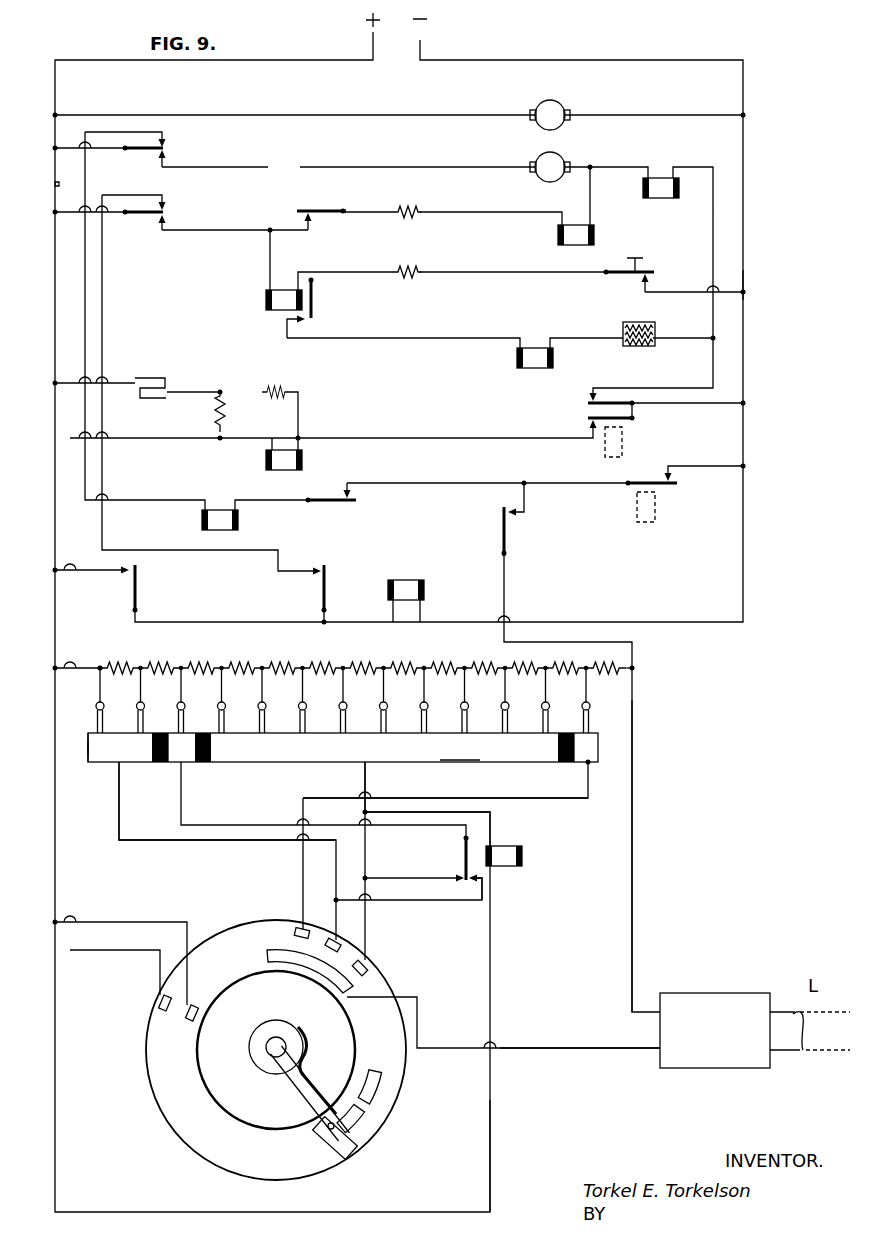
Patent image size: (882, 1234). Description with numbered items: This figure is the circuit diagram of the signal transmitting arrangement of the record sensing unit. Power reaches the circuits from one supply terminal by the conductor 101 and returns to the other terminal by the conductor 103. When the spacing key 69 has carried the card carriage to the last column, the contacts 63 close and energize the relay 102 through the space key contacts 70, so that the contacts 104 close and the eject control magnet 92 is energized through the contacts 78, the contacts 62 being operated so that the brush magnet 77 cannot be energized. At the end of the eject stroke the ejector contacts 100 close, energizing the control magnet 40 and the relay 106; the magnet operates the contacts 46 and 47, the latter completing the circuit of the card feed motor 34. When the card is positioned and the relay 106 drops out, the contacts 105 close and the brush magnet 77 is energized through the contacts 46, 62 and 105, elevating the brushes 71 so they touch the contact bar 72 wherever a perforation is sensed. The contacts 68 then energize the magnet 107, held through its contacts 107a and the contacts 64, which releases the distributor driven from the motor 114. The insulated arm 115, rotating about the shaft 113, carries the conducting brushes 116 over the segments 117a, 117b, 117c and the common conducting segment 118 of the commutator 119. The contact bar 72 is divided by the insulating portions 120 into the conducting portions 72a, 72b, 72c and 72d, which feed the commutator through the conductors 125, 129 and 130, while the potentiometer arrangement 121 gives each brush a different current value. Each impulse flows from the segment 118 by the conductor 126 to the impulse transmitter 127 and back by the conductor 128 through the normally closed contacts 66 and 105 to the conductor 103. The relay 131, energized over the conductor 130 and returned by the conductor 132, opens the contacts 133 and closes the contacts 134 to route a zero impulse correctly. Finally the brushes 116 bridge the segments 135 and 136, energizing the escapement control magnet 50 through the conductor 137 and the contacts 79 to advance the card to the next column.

The conductor 101 is at (56, 184).
The contacts 46 is at (158, 140).
The contacts 47 is at (158, 156).
The contacts 64 is at (166, 206).
The contacts 63 is at (160, 226).
The ejector contacts 100 is at (312, 218).
The relay 102 is at (283, 291).
The contacts 104 is at (318, 321).
The motor 114 is at (544, 112).
The card feed motor 34 is at (544, 163).
The control magnet 40 is at (574, 231).
The relay 106 is at (660, 187).
The spacing key 69 is at (638, 262).
The space key contacts 70 is at (633, 281).
The conductor 103 is at (745, 285).
The eject control magnet 92 is at (531, 352).
The contacts 78 is at (600, 400).
The contacts 79 is at (583, 427).
The brush magnet 77 is at (630, 445).
The escapement control magnet 50 is at (302, 459).
The contacts 62 is at (352, 492).
The contacts 66 is at (510, 506).
The contacts 105 is at (675, 480).
The contacts 107a is at (321, 568).
The magnet 107 is at (405, 583).
The contacts 68 is at (125, 583).
The potentiometer arrangement 121 is at (600, 666).
The brushes 71 is at (100, 717).
The contact bar 72 is at (487, 762).
The insulating portions 120 is at (558, 749).
The conducting portion 72a is at (119, 748).
The conducting portion 72b is at (182, 748).
The conducting portion 72c is at (410, 752).
The conducting portion 72d is at (606, 748).
The conductor 137 is at (72, 743).
The conductor 130 is at (367, 789).
The conductor 125 is at (572, 802).
The conductor 129 is at (158, 842).
The contacts 133 is at (461, 876).
The contacts 134 is at (484, 888).
The relay 131 is at (510, 860).
The conducting segment 117a is at (297, 926).
The conducting segment 117b is at (342, 950).
The conducting segment 117c is at (368, 969).
The common conducting segment 118 is at (307, 963).
The commutator 119 is at (233, 1152).
The shaft 113 is at (268, 1052).
The insulated arm 115 is at (302, 1080).
The conducting brushes 116 is at (383, 1093).
The segment 135 is at (158, 1013).
The segment 136 is at (188, 1027).
The conductor 128 is at (632, 893).
The impulse transmitter 127 is at (725, 1005).
The conductor 126 is at (574, 1048).
The conductor 132 is at (490, 1138).